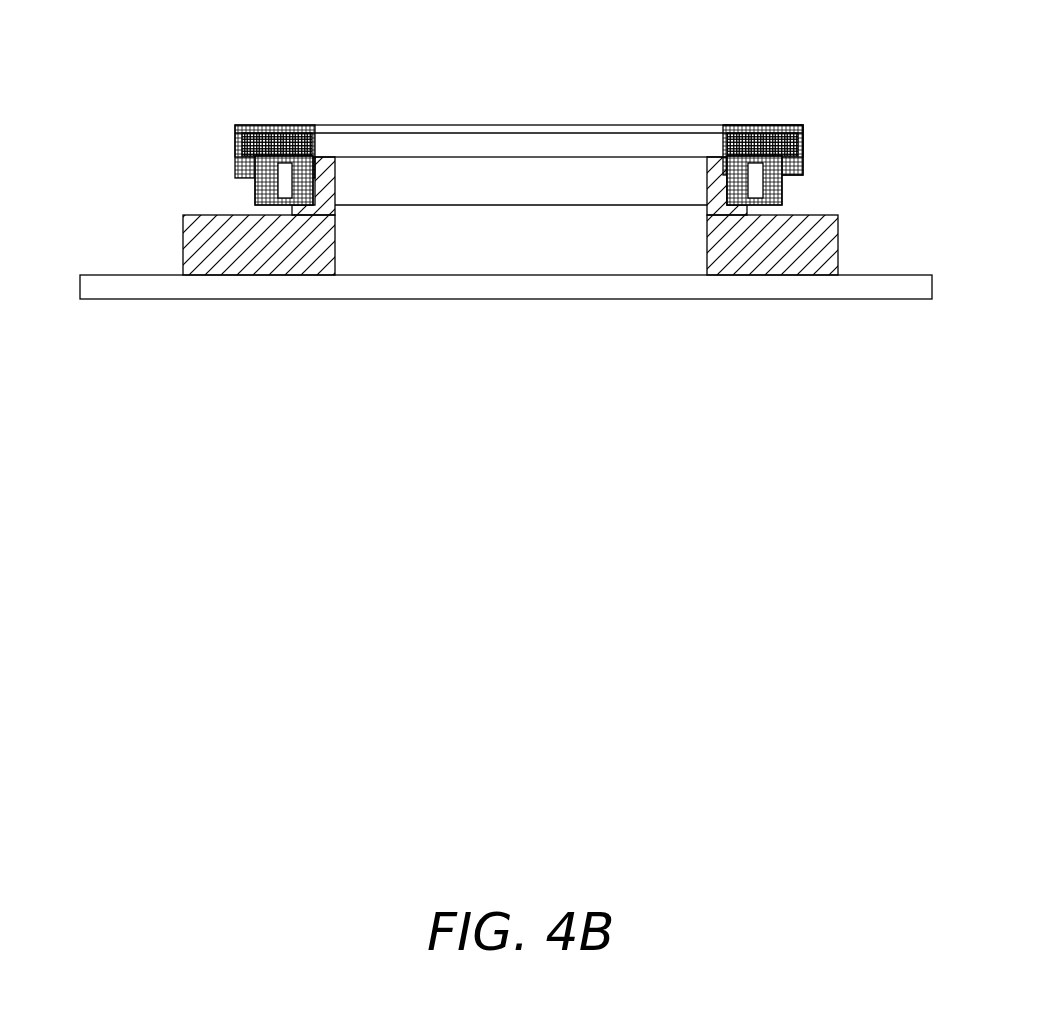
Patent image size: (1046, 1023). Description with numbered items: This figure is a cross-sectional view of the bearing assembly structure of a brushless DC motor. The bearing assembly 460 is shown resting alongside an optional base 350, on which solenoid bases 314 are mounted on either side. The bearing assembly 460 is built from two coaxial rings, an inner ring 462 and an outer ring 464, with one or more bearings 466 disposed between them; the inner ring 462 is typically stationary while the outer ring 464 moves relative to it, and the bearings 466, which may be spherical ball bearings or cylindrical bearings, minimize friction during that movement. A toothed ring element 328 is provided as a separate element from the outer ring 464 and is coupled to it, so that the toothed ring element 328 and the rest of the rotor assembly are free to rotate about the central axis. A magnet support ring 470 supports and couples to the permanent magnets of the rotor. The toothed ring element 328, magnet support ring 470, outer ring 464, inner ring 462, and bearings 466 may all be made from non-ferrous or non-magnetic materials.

The toothed ring element 328 is at (238, 123).
The magnet support ring 470 is at (287, 125).
The inner ring 462 is at (723, 153).
The outer ring 464 is at (800, 127).
The bearing assembly 460 is at (238, 192).
The bearings 466 is at (782, 183).
The base 350 is at (108, 288).
The solenoid bases 314 is at (817, 263).